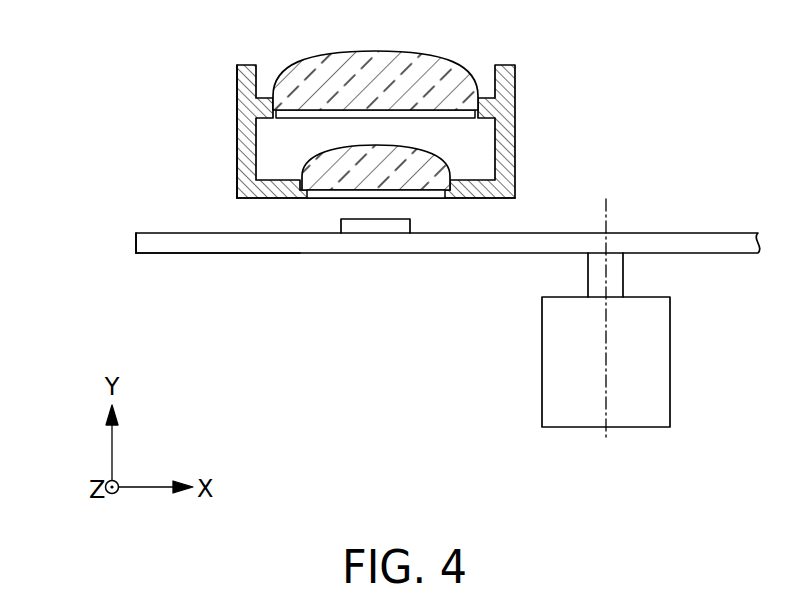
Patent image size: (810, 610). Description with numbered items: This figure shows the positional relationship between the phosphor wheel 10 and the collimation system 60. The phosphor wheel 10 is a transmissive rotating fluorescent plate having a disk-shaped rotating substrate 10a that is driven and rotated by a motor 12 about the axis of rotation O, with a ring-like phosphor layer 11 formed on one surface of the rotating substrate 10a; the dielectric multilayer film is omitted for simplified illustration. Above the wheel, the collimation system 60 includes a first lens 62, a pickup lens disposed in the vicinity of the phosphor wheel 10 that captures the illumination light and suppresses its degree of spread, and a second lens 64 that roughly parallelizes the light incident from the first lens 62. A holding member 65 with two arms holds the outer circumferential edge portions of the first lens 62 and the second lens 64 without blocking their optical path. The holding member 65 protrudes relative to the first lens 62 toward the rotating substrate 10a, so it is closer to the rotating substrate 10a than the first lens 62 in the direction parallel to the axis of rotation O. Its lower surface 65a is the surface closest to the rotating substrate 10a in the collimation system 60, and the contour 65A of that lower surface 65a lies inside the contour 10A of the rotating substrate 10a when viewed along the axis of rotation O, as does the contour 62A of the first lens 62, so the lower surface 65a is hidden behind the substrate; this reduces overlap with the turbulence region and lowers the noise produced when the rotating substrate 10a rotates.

The phosphor wheel 10 is at (153, 224).
The contour of the rotating substrate 10A is at (133, 249).
The rotating substrate 10a is at (145, 243).
The phosphor layer 11 is at (385, 232).
The motor 12 is at (648, 384).
The collimation system 60 is at (292, 112).
The first lens 62 is at (323, 157).
The contour of the lower surface of the first lens 62A is at (292, 193).
The second lens 64 is at (303, 64).
The holding member 65 is at (502, 117).
The contour of the lower surface 65A is at (237, 195).
The lower surface 65a is at (487, 198).
The axis of rotation O is at (606, 206).